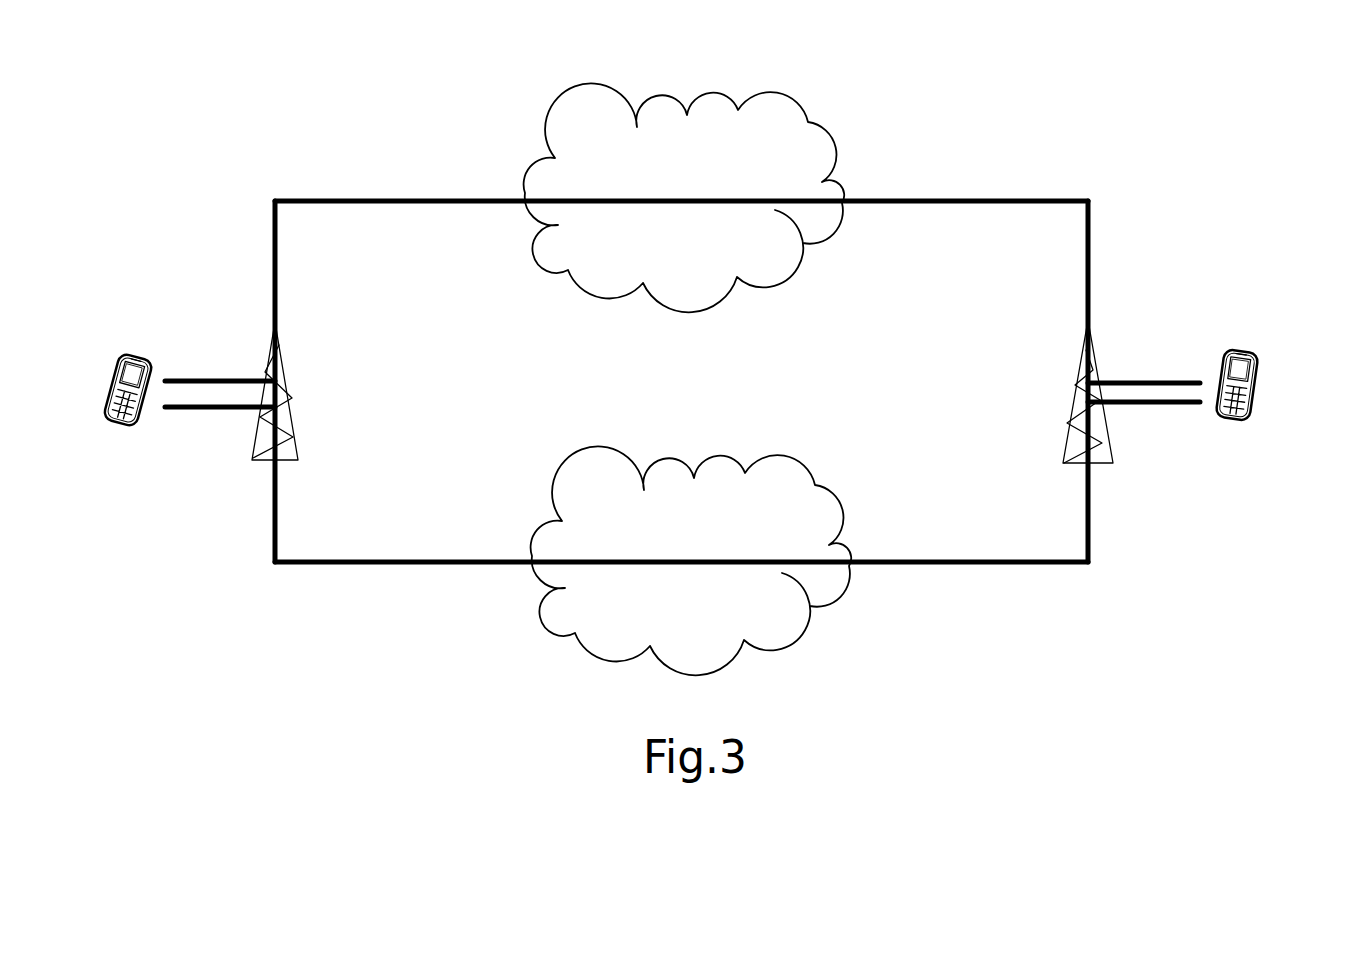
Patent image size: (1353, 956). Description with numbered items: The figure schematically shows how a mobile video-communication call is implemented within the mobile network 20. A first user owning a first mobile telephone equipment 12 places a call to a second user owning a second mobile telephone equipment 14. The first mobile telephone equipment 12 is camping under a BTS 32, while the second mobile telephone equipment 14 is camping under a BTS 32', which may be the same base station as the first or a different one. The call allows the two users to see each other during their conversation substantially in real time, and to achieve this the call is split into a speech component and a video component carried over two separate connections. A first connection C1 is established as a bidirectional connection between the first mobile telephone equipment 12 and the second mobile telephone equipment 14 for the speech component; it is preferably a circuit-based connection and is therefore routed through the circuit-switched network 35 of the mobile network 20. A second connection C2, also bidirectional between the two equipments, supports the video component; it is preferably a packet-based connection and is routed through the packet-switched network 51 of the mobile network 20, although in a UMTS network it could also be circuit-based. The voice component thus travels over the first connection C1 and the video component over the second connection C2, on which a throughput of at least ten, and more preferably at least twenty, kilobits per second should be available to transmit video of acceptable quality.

The mobile network 20 is at (724, 380).
The first mobile telephone equipment 12 is at (122, 418).
The second mobile telephone equipment 14 is at (1257, 415).
The BTS 32 is at (266, 379).
The BTS 32' is at (1090, 387).
The circuit-switched network 35 is at (822, 127).
The packet-switched network 51 is at (828, 603).
The first connection C1 is at (307, 198).
The second connection C2 is at (347, 563).